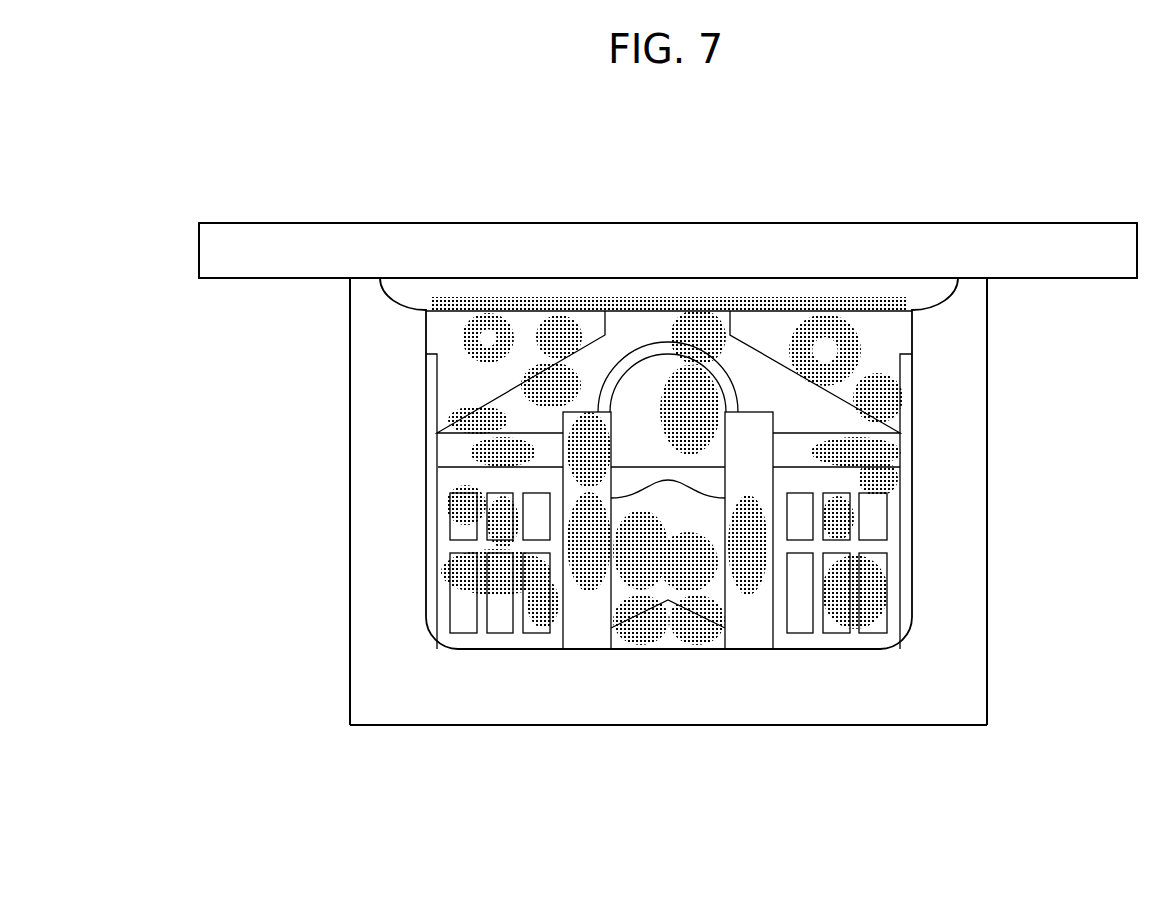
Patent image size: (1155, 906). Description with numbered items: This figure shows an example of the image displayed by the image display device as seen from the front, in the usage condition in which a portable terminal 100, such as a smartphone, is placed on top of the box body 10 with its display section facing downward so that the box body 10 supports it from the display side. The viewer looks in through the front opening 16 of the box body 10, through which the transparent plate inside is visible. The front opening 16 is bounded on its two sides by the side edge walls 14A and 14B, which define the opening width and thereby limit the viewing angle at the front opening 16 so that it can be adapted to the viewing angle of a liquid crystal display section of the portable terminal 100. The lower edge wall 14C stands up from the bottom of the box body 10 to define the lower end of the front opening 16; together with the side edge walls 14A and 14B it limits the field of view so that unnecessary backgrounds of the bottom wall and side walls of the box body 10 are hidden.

The portable terminal 100 is at (658, 222).
The box body 10 is at (683, 540).
The side edge wall 14A is at (370, 452).
The side edge wall 14B is at (972, 450).
The lower edge wall 14C is at (770, 712).
The front opening 16 is at (590, 620).